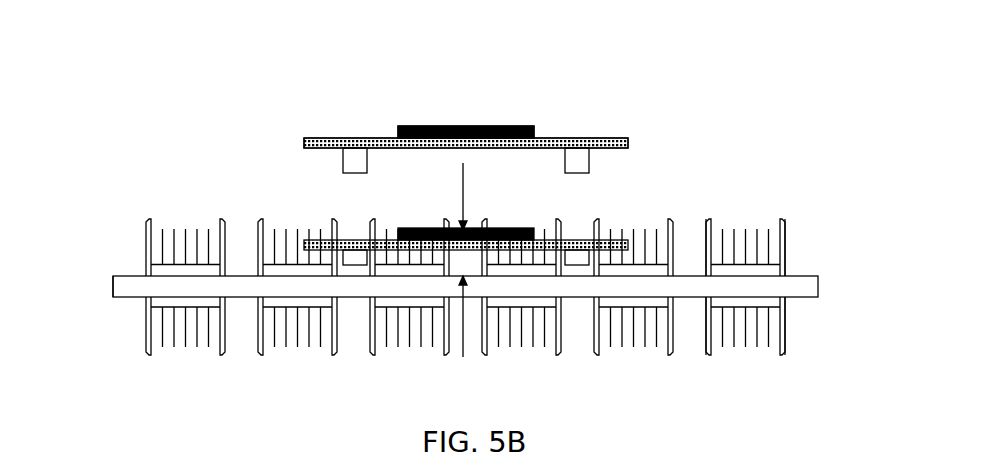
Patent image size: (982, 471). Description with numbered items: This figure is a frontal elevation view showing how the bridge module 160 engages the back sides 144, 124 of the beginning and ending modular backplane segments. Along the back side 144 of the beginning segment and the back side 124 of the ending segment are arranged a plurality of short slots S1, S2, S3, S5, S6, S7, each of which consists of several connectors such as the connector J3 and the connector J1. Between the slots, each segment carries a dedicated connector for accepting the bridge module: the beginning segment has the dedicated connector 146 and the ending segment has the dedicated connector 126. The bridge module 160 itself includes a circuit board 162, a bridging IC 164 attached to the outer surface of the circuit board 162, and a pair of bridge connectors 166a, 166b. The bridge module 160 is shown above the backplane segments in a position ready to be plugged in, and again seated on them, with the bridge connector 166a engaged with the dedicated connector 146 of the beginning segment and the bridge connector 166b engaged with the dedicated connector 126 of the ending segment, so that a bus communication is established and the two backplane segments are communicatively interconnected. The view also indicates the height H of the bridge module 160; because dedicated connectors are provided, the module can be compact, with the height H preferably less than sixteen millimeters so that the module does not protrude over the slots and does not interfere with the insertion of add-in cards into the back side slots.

The back side of the ending backplane segment 124 is at (812, 275).
The back side of the beginning backplane segment 144 is at (133, 276).
The short slot S1 is at (409, 304).
The short slot S2 is at (297, 304).
The short slot S3 is at (185, 304).
The short slot S5 is at (745, 304).
The short slot S6 is at (633, 304).
The short slot S7 is at (521, 304).
The bridge module 160 is at (421, 119).
The circuit board 162 is at (338, 138).
The bridging IC 164 is at (521, 126).
The bridge connector 166a is at (353, 172).
The bridge connector 166b is at (585, 160).
The dedicated connector 146 is at (355, 265).
The dedicated connector 126 is at (573, 265).
The height of the bridge module H is at (466, 276).
The connector J3 is at (757, 226).
The connector J1 is at (786, 330).